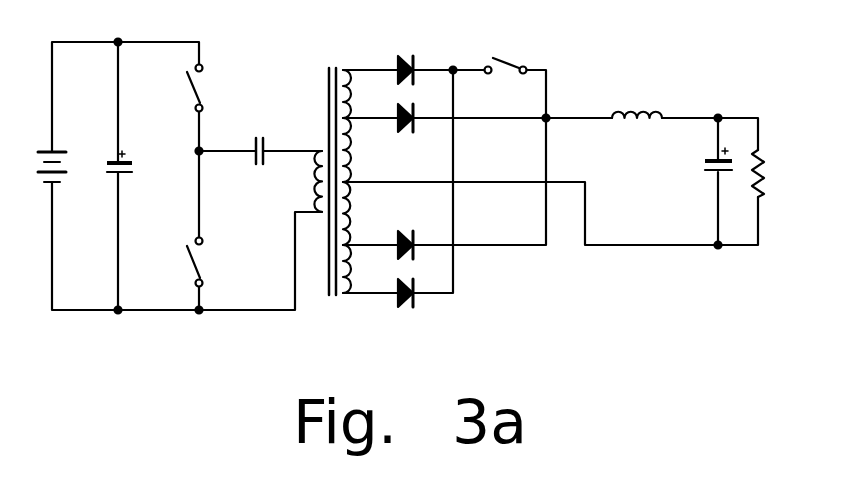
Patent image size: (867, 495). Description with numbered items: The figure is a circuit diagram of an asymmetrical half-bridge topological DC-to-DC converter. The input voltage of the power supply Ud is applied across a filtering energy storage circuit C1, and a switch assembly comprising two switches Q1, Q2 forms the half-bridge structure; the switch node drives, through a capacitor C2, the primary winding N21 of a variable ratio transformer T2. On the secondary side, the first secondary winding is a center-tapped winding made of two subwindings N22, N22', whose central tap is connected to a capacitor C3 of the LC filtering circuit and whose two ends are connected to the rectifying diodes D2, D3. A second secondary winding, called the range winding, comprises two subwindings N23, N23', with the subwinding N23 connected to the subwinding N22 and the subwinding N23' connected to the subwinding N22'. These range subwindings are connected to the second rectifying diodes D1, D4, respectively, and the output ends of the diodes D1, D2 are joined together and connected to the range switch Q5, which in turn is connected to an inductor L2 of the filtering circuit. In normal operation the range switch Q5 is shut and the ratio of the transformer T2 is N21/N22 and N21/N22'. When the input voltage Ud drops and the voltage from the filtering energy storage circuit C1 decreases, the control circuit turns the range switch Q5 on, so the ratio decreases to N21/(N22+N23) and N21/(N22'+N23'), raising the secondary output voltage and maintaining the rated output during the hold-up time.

The input voltage of the power supply Ud is at (64, 156).
The filtering energy storage circuit C1 is at (131, 159).
The switch Q1 is at (182, 88).
The switch Q2 is at (182, 262).
The capacitor C2 is at (263, 139).
The transformer T2 is at (333, 168).
The primary winding N21 is at (298, 181).
The subwinding N22 is at (364, 150).
The subwinding N22' is at (367, 213).
The subwinding N23 is at (366, 94).
The subwinding N23' is at (367, 269).
The second rectifying diode D1 is at (411, 60).
The rectifying diode D2 is at (412, 134).
The rectifying diode D3 is at (412, 234).
The second rectifying diode D4 is at (412, 310).
The range switch Q5 is at (506, 53).
The inductor L2 is at (637, 103).
The capacitor C3 is at (705, 162).